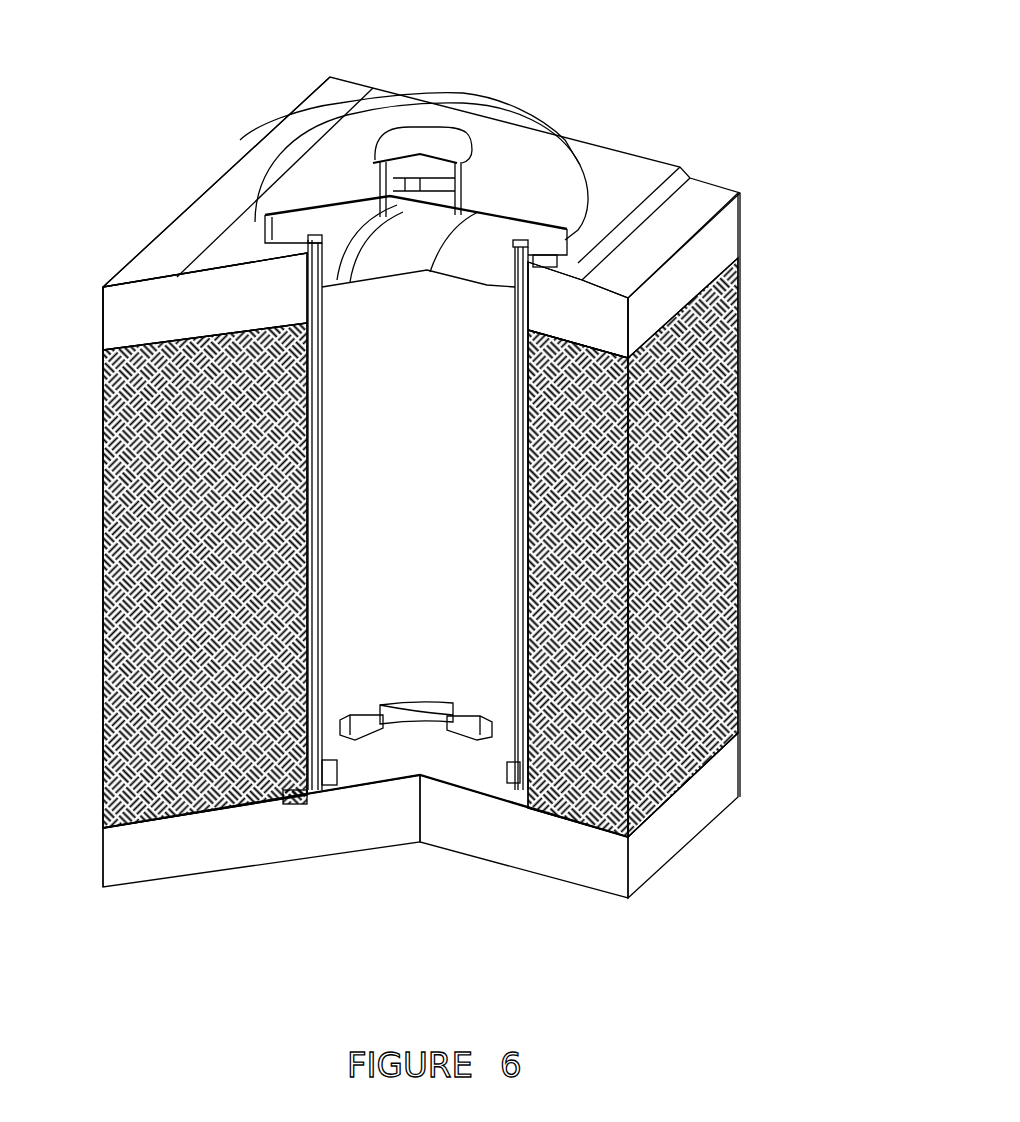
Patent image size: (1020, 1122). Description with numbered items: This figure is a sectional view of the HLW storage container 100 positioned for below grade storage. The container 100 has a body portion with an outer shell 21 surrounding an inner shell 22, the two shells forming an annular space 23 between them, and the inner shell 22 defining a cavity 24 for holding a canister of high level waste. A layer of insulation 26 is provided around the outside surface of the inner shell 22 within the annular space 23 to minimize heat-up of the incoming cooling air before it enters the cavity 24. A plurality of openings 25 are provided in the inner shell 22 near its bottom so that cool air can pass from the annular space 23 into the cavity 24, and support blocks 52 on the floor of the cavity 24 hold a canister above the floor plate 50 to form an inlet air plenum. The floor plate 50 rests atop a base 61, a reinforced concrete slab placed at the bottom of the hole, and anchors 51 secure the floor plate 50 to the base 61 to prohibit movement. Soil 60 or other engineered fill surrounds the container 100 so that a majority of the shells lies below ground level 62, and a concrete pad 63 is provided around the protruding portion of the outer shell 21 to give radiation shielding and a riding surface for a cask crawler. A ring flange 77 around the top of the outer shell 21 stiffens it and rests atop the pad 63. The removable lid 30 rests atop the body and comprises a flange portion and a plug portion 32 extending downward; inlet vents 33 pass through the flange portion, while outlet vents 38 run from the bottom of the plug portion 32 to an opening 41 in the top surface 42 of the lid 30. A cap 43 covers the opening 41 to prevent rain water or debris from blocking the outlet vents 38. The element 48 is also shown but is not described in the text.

The HLW storage container 100 is at (663, 63).
The layer of insulation 26 is at (700, 183).
The concrete pad 63 is at (213, 207).
The top surface 42 is at (310, 135).
The ground level 62 is at (706, 285).
The base 61 is at (600, 862).
The soil 60 is at (600, 688).
The outer shell 21 is at (530, 440).
The space 23 is at (303, 605).
The ring flange 77 is at (298, 262).
The top layer 48 is at (292, 258).
The inner shell 22 is at (368, 487).
The cavity 24 is at (447, 513).
The anchors 51 is at (280, 822).
The floor plate 50 is at (483, 773).
The openings 25 is at (497, 718).
The support blocks 52 is at (358, 745).
The plug portion 32 is at (398, 262).
The inlet vents 33 is at (275, 245).
The outlet vents 38 is at (300, 178).
The lid 30 is at (563, 136).
The cap 43 is at (438, 122).
The opening 41 is at (402, 175).